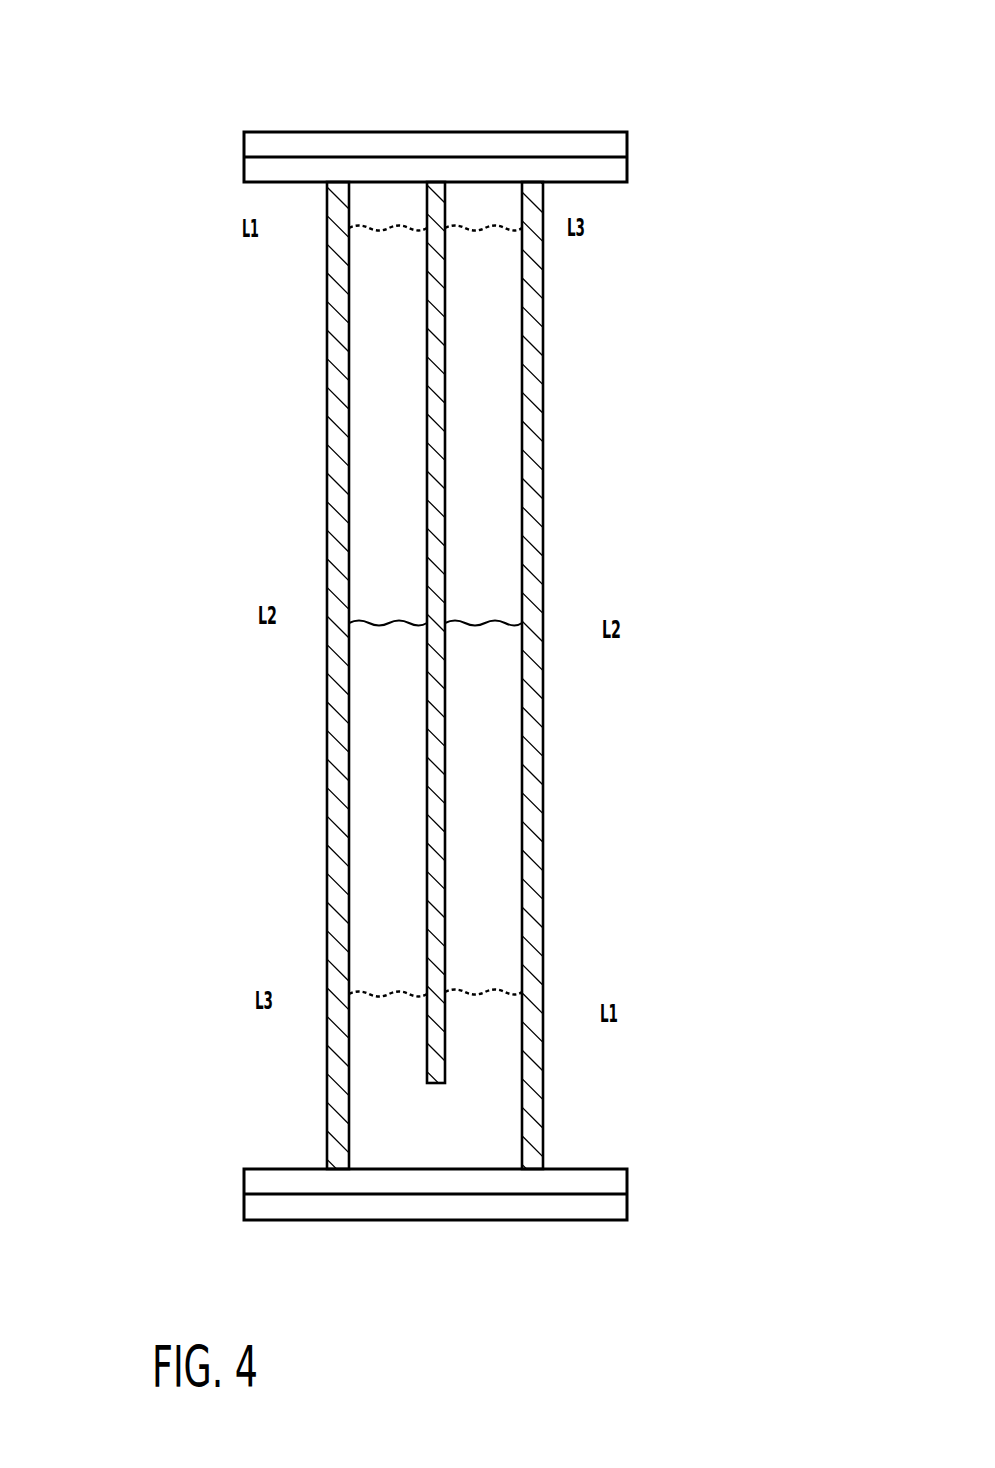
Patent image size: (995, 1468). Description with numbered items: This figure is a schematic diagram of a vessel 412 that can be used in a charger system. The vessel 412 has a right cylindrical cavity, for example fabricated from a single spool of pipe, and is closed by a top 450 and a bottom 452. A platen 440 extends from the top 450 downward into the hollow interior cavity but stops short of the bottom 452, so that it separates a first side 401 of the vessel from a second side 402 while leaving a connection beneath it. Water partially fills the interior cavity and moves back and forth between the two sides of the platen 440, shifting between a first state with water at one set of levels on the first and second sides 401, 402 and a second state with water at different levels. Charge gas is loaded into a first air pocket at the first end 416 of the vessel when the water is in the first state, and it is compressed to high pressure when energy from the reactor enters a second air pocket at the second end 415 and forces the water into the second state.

The first side of the vessel 401 is at (255, 450).
The second side of the vessel 402 is at (603, 462).
The vessel 412 is at (613, 873).
The second end of the vessel 415 is at (497, 208).
The first end of the vessel 416 is at (370, 208).
The platen 440 is at (427, 288).
The top of the vessel 450 is at (482, 182).
The bottom of the vessel 452 is at (470, 1169).